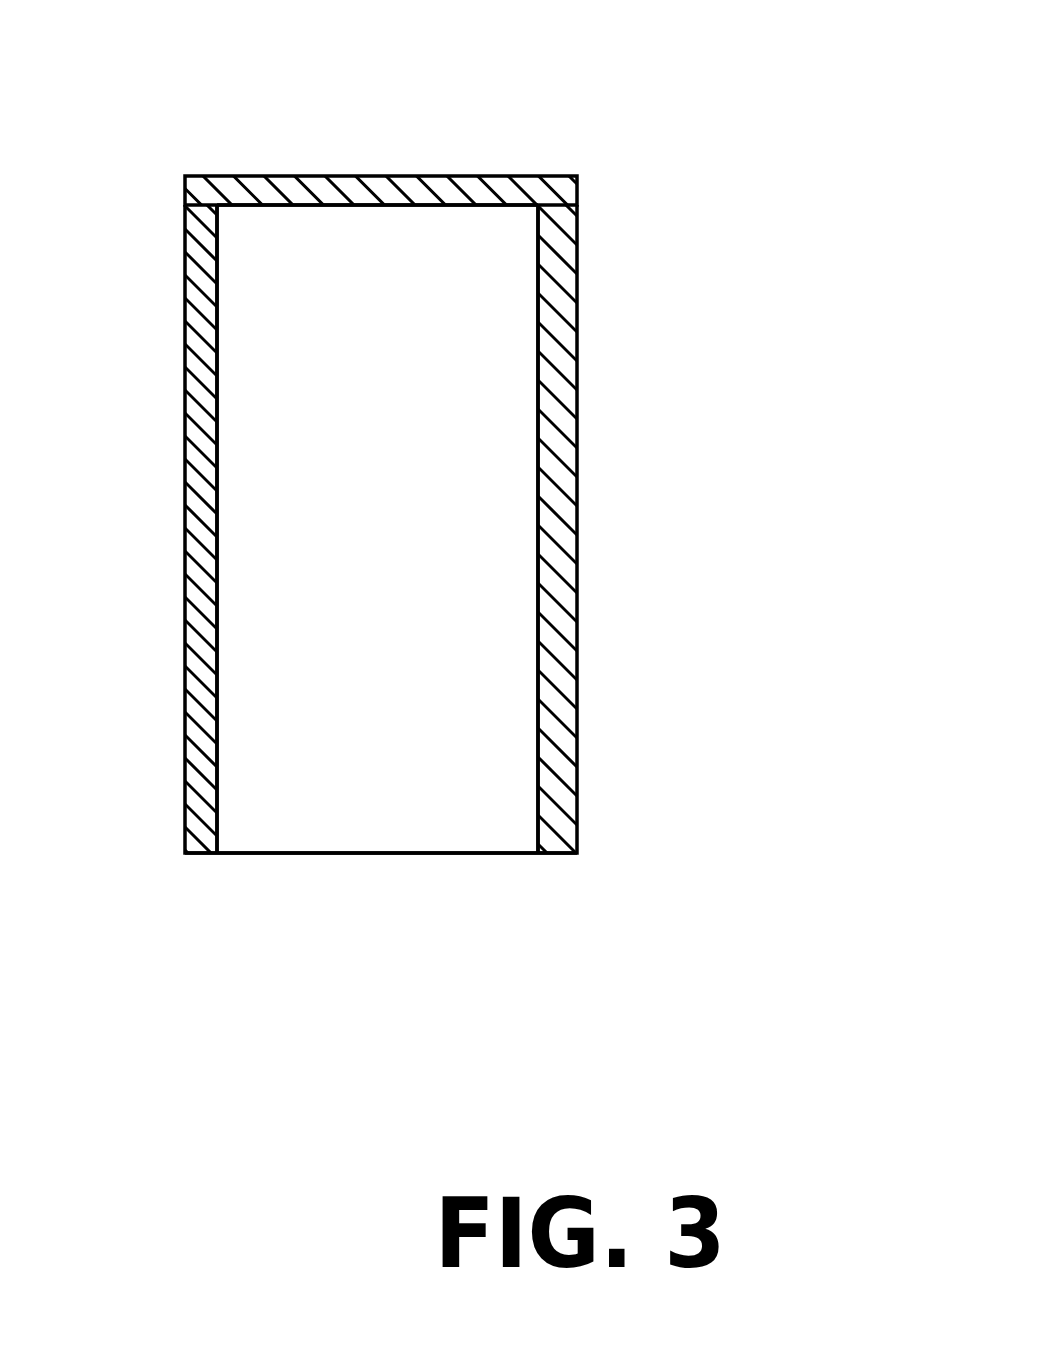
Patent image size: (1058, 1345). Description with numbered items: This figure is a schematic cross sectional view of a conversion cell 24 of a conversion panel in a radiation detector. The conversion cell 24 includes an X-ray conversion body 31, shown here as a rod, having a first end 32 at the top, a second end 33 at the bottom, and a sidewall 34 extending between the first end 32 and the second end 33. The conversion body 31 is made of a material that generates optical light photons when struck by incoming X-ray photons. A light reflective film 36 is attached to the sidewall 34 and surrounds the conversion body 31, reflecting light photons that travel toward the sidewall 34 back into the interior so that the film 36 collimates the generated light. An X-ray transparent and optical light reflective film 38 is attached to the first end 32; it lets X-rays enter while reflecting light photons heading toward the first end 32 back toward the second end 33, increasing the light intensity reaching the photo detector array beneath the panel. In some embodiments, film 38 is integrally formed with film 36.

The conversion cell 24 is at (800, 238).
The X-ray conversion body 31 is at (400, 417).
The first end 32 is at (367, 205).
The second end 33 is at (385, 853).
The sidewall 34 is at (540, 495).
The light reflective film 36 is at (185, 440).
The X-ray transparent and optical light reflective film 38 is at (473, 176).